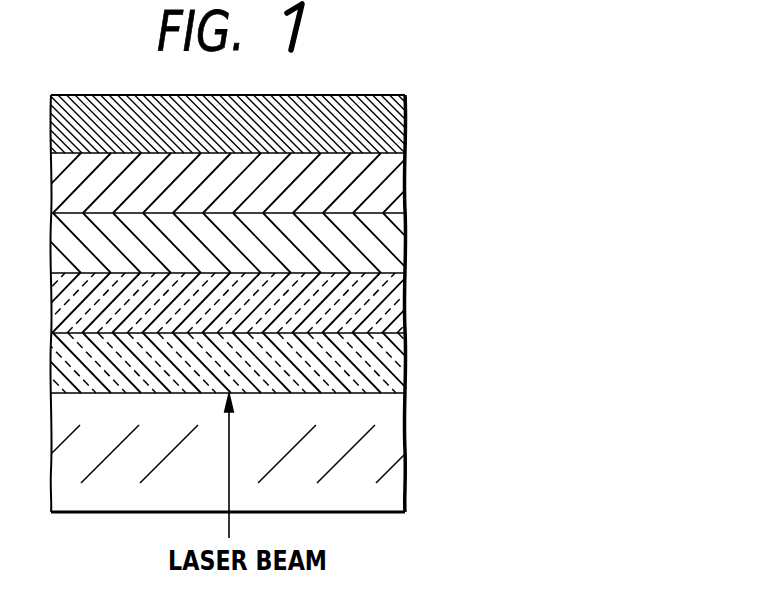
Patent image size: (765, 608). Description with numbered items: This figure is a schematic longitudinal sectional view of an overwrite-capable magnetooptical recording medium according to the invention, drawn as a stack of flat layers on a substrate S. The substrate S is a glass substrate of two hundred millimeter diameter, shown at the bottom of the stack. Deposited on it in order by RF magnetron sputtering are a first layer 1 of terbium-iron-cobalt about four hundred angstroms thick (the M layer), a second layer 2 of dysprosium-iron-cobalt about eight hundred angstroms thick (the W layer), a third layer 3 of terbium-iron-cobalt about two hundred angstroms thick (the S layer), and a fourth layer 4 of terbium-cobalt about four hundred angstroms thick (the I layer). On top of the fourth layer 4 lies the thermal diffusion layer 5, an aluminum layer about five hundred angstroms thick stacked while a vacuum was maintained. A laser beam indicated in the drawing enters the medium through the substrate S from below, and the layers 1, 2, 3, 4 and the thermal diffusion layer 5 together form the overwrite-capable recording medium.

The thermal diffusion layer 5 is at (407, 111).
The 4th layer 4 is at (407, 186).
The 3rd layer 3 is at (407, 247).
The 2nd layer 2 is at (407, 305).
The 1st layer 1 is at (407, 364).
The substrate S is at (407, 449).